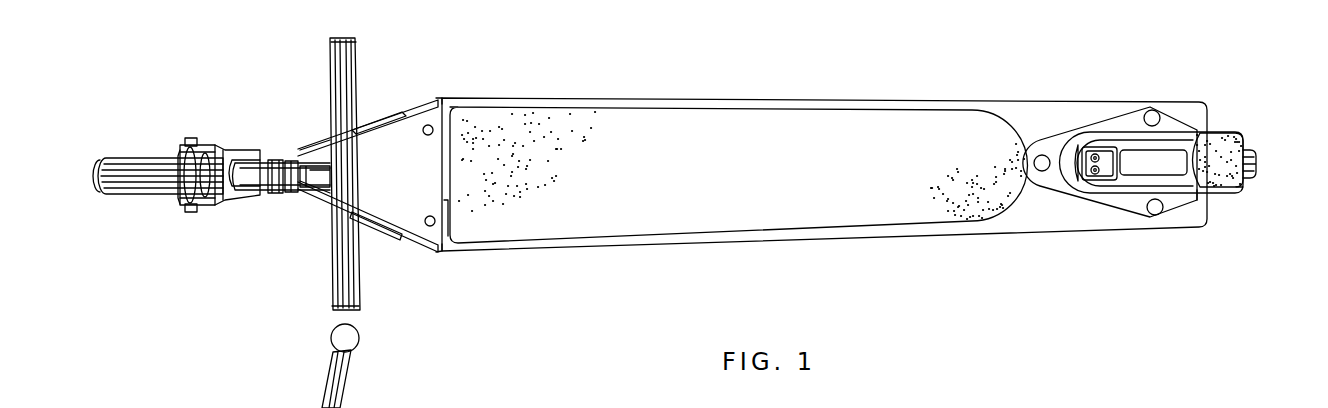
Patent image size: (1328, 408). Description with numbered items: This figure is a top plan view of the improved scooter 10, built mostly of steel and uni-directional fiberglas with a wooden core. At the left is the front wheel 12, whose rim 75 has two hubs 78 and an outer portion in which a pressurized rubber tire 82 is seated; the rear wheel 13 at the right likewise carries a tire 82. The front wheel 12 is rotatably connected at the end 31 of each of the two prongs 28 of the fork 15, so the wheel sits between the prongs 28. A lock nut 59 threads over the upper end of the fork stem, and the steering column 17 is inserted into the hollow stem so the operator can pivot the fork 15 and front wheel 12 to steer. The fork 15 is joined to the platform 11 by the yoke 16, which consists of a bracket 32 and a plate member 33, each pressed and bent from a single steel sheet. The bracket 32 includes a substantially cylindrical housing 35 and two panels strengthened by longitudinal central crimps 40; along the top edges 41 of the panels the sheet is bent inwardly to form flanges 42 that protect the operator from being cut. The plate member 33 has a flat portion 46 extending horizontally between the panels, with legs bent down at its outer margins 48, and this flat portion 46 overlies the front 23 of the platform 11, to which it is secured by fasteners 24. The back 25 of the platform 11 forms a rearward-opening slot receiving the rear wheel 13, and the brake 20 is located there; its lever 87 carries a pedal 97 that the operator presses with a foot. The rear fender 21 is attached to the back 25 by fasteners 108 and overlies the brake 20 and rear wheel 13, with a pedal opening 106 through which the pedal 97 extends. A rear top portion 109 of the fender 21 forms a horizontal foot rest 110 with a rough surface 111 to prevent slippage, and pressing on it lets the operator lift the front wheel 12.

The scooter 10 is at (620, 252).
The platform 11 is at (670, 247).
The front wheel 12 is at (150, 196).
The rear wheel 13 is at (1250, 172).
The fork 15 is at (240, 150).
The yoke 16 is at (416, 118).
The steering column 17 is at (325, 190).
The brake 20 is at (1095, 183).
The rear fender 21 is at (1110, 216).
The front 23 is at (448, 256).
The fasteners 24 is at (430, 125).
The back 25 is at (960, 232).
The prongs 28 is at (195, 142).
The end 31 is at (190, 212).
The bracket 32 is at (300, 163).
The plate member 33 is at (444, 185).
The cylindrical housing 35 is at (272, 160).
The longitudinal central crimps 40 is at (334, 92).
The top edges 41 is at (370, 125).
The flanges 42 is at (372, 213).
The flat portion 46 is at (444, 220).
The outer margins 48 is at (445, 100).
The lock nut 59 is at (276, 194).
The rim 75 is at (178, 152).
The hubs 78 is at (186, 204).
The pressurized rubber tires 82 is at (115, 196).
The lever 87 is at (1092, 146).
The pedal 97 is at (1076, 147).
The pedal opening 106 is at (1128, 150).
The fasteners 108 is at (1152, 110).
The rear top portion 109 is at (1215, 191).
The foot rest 110 is at (1210, 134).
The rough surface 111 is at (1222, 190).